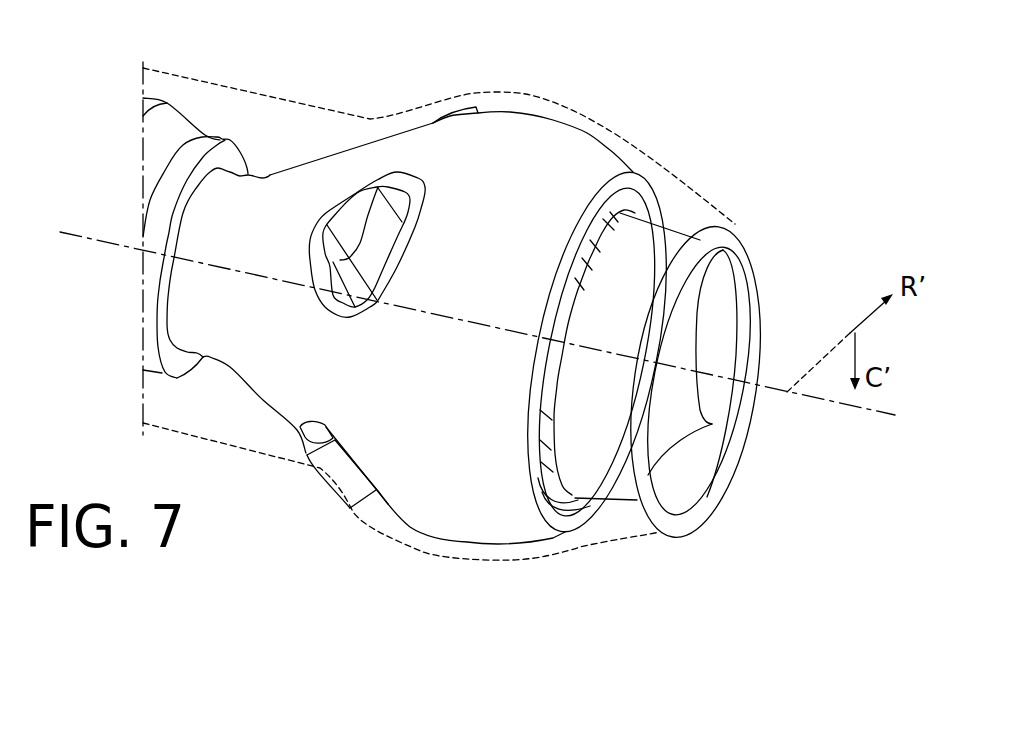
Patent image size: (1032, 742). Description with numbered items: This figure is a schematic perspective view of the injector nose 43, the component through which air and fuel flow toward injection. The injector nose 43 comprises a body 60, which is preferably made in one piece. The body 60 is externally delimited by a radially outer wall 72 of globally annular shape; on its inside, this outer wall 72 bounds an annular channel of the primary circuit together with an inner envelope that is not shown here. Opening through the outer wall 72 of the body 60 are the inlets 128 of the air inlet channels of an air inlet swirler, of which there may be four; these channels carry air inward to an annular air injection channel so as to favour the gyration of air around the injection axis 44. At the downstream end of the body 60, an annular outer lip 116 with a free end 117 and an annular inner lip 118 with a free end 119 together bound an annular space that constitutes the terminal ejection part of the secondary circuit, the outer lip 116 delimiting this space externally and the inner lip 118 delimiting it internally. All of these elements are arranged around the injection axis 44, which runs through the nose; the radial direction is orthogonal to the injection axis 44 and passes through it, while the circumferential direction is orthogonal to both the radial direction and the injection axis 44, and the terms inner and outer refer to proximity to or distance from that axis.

The injector nose 43 is at (653, 65).
The body 60 is at (291, 97).
The radially outer wall 72 is at (425, 553).
The inlets 128 is at (348, 210).
The free end 117 is at (747, 252).
The annular outer lip 116 is at (737, 273).
The annular inner lip 118 is at (680, 423).
The free end 119 is at (657, 428).
The injection axis 44 is at (833, 404).